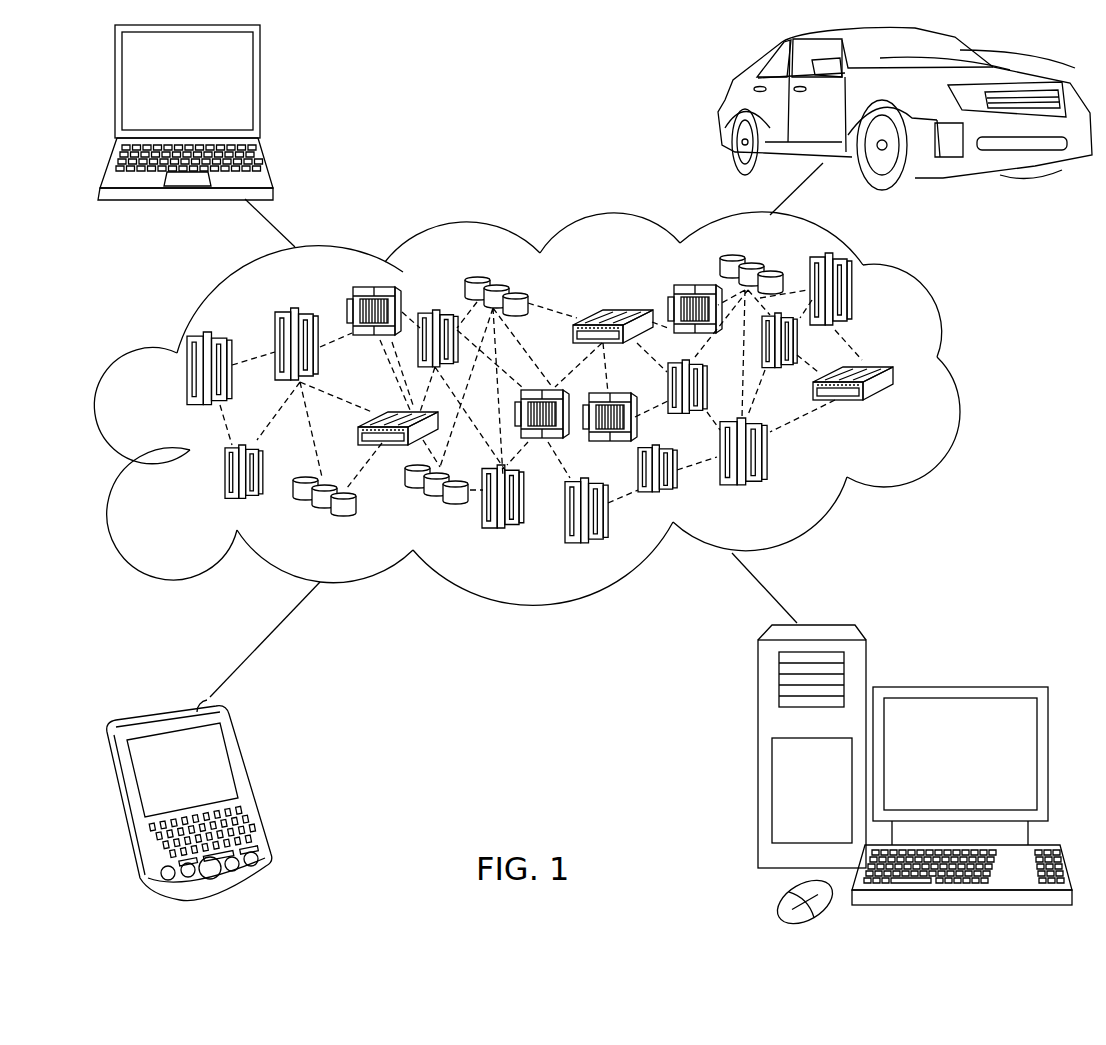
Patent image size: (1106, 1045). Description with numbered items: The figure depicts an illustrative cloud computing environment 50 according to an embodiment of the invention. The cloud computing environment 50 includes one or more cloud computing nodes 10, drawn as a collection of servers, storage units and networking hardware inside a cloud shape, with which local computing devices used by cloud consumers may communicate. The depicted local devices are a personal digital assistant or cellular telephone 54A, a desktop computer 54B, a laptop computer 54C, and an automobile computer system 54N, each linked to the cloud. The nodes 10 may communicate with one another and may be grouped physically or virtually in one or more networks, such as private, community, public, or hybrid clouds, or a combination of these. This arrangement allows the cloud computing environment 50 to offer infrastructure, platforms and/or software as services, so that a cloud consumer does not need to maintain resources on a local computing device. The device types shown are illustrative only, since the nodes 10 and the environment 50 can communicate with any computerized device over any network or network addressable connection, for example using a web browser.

The cloud computing node 10 is at (900, 413).
The cloud computing environment 50 is at (557, 408).
The personal digital assistant (PDA) or cellular telephone 54A is at (250, 790).
The desktop computer 54B is at (956, 687).
The laptop computer 54C is at (261, 90).
The automobile computer system 54N is at (722, 107).